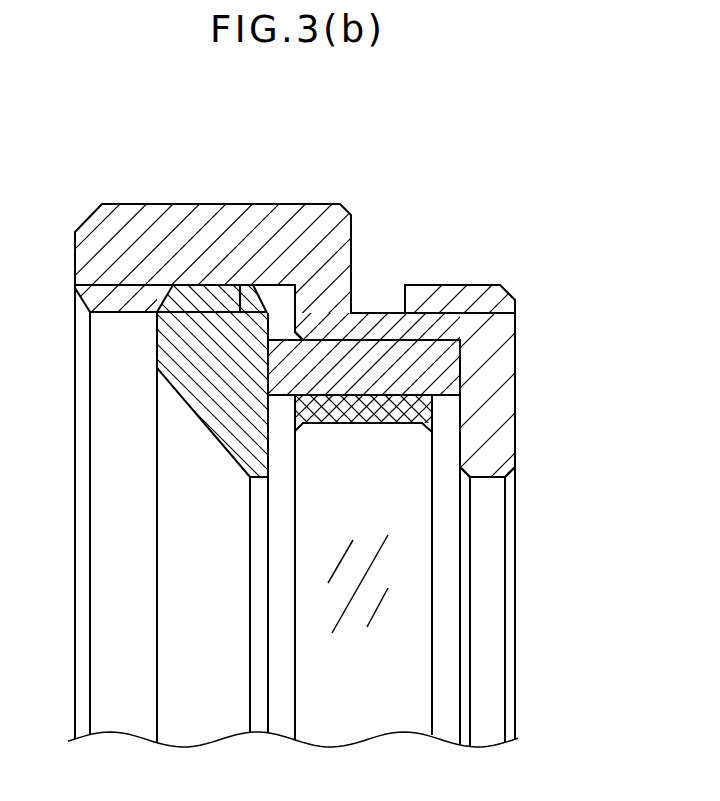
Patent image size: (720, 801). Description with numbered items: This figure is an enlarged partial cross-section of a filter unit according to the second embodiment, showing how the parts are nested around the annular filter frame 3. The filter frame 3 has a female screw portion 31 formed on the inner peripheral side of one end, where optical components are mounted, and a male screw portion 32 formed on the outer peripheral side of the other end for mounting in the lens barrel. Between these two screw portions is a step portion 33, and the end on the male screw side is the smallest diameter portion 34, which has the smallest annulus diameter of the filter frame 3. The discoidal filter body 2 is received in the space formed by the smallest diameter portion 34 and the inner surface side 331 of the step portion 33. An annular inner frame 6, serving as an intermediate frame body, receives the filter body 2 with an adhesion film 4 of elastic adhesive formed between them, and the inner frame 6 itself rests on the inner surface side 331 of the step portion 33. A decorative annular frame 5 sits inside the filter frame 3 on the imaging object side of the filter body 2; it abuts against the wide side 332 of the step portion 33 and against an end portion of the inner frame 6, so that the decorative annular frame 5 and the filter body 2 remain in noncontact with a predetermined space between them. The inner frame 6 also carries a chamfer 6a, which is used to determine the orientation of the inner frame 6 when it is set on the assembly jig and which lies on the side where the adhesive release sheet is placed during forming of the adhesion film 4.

The filter body 2 is at (405, 652).
The filter frame 3 is at (320, 204).
The female screw portion 31 is at (130, 300).
The male screw portion 32 is at (457, 298).
The step portion 33 is at (333, 298).
The inner surface side 331 is at (410, 342).
The wide side 332 is at (295, 297).
The smallest diameter portion 34 is at (487, 423).
The adhesion film 4 is at (380, 428).
The decorative annular frame 5 is at (203, 363).
The inner frame 6 is at (300, 373).
The chamfer 6a is at (462, 338).